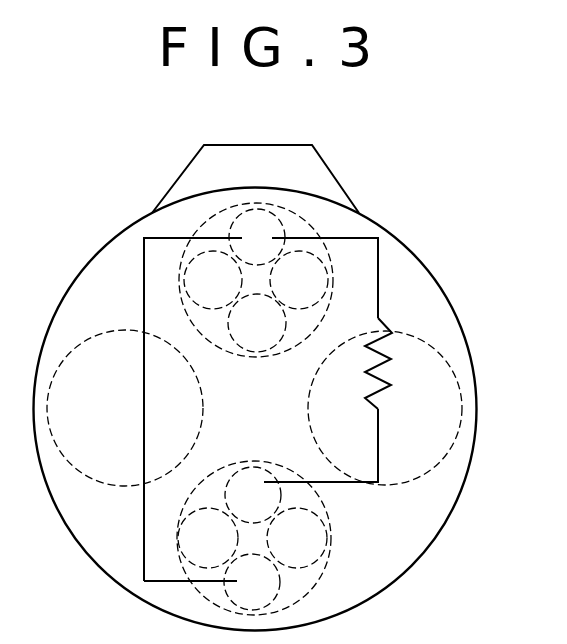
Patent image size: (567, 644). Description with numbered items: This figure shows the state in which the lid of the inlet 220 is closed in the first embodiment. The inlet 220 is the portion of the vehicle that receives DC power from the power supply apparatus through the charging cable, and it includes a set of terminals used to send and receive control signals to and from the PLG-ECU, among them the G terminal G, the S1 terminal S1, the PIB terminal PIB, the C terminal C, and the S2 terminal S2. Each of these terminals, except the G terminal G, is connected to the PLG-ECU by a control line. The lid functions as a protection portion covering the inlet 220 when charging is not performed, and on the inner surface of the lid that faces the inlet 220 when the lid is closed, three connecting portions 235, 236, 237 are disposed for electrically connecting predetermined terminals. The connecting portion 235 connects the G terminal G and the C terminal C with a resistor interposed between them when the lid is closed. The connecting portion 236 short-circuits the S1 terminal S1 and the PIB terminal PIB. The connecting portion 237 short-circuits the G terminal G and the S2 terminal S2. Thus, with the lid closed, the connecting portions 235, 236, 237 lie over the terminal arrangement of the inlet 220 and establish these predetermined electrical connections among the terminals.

The inlet 220 is at (410, 226).
The connecting portion 235 is at (385, 325).
The connecting portion 236 is at (258, 283).
The connecting portion 237 is at (145, 270).
The G terminal G is at (257, 237).
The S1 terminal S1 is at (277, 281).
The PIB terminal PIB is at (299, 280).
The C terminal C is at (253, 495).
The S2 terminal S2 is at (252, 582).